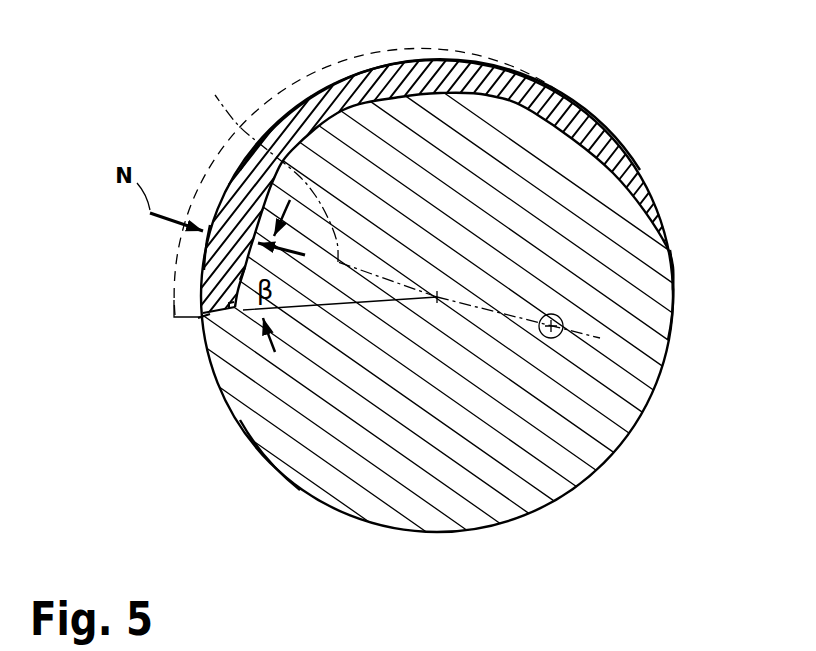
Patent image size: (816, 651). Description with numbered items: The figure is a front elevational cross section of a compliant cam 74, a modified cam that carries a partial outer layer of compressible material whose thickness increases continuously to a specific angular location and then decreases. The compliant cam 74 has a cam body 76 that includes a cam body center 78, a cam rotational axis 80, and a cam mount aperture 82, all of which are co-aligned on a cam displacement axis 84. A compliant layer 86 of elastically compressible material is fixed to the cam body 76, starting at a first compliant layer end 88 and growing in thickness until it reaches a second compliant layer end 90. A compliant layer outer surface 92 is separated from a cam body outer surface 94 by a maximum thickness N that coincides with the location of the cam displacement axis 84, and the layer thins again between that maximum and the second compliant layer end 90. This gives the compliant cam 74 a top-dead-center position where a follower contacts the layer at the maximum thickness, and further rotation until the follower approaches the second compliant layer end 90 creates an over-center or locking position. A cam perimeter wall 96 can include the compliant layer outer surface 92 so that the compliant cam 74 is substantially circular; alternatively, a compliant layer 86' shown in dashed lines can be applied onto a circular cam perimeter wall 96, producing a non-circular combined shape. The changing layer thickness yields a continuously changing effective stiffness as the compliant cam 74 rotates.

The compliant cam 74 is at (687, 112).
The cam body 76 is at (567, 463).
The cam body center 78 is at (440, 294).
The cam rotational axis 80 is at (565, 329).
The cam mount aperture 82 is at (560, 338).
The cam displacement axis 84 is at (219, 99).
The compliant layer 86 is at (439, 93).
The compliant layer 86' is at (338, 182).
The first compliant layer end 88 is at (679, 286).
The second compliant layer end 90 is at (201, 316).
The compliant layer outer surface 92 is at (203, 244).
The cam body outer surface 94 is at (232, 278).
The cam perimeter wall 96 is at (262, 458).